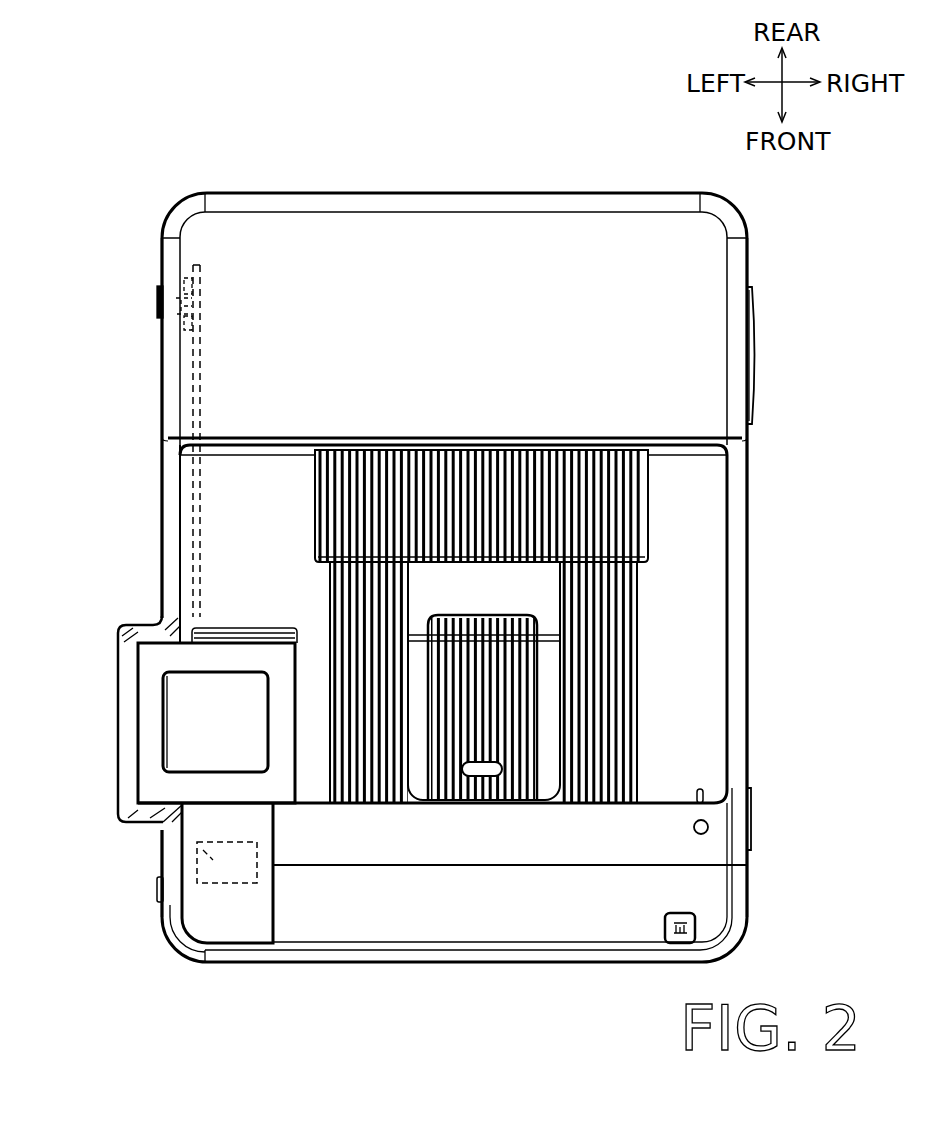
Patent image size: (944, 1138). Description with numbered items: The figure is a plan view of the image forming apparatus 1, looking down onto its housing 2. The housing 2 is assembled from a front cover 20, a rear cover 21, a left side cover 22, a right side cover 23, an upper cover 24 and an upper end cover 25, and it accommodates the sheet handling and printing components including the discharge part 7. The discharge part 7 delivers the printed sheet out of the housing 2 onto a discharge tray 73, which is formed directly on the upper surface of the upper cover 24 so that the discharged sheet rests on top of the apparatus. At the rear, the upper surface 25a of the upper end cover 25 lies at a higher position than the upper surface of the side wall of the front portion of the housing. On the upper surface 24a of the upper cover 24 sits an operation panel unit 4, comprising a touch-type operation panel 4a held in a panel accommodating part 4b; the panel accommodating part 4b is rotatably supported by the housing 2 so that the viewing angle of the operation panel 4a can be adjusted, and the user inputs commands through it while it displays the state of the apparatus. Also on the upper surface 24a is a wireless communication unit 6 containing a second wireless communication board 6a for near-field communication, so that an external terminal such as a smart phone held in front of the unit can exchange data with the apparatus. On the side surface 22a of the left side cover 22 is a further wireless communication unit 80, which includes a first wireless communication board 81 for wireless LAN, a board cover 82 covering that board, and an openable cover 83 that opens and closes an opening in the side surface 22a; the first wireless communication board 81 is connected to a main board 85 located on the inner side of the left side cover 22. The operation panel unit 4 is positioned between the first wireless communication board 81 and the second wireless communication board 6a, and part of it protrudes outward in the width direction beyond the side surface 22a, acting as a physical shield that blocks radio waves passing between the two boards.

The image forming apparatus 1 is at (492, 112).
The housing 2 is at (568, 182).
The operation panel unit 4 is at (189, 625).
The operation panel 4a is at (187, 698).
The panel accommodating part 4b is at (153, 717).
The wireless communication unit 6 is at (283, 902).
The second wireless communication board 6a is at (200, 853).
The discharge part 7 is at (660, 497).
The discharge tray 73 is at (618, 592).
The front cover 20 is at (463, 968).
The rear cover 21 is at (447, 190).
The left side cover 22 is at (157, 542).
The side surface 22a is at (162, 503).
The right side cover 23 is at (753, 558).
The upper cover 24 is at (691, 697).
The upper surface 24a is at (673, 664).
The upper end cover 25 is at (697, 265).
The upper surface 25a is at (691, 381).
The wireless communication unit 80 is at (83, 270).
The first wireless communication board 81 is at (150, 330).
The board cover 82 is at (160, 275).
The openable cover 83 is at (160, 303).
The main board 85 is at (197, 400).